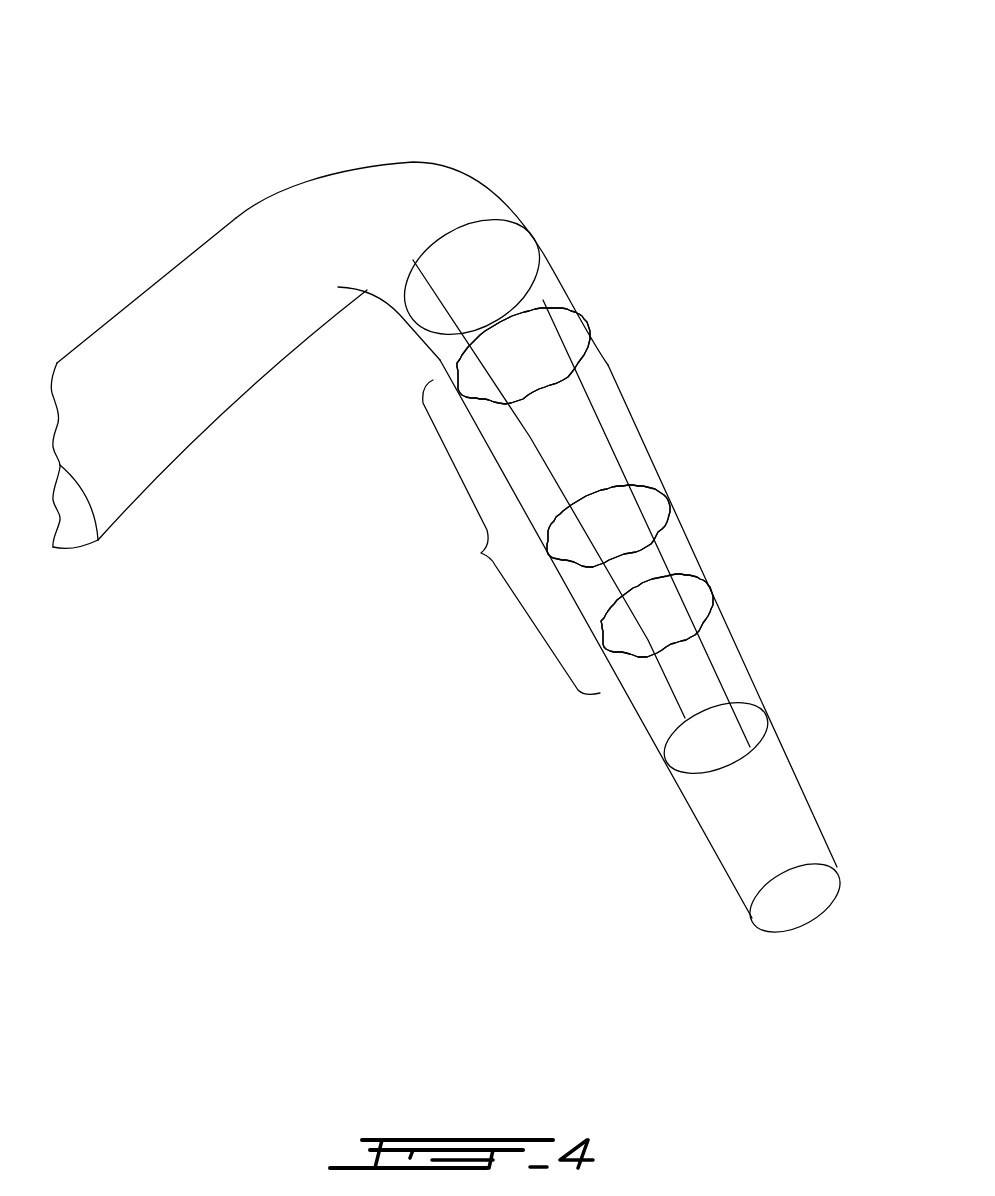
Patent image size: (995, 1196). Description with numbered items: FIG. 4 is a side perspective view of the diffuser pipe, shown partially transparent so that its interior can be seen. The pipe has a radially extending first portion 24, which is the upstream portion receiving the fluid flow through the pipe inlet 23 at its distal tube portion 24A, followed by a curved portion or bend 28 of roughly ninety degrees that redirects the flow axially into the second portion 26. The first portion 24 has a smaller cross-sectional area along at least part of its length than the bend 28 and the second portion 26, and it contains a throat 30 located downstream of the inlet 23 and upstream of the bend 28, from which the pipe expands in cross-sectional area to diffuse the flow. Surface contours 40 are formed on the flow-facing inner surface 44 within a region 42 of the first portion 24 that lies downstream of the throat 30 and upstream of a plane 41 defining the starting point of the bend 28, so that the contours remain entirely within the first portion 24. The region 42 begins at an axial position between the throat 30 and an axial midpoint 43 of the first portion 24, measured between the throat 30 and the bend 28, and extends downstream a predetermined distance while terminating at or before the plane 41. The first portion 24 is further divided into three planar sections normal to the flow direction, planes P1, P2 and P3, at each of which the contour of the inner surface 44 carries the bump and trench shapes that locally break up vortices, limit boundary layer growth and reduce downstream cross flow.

The pipe inlet 23 is at (810, 902).
The first portion 24 is at (751, 622).
The distal tube portion 24A is at (630, 690).
The second portion 26 is at (90, 318).
The curved portion 28 is at (376, 150).
The throat 30 is at (748, 748).
The surface contours 40 is at (644, 640).
The plane 41 is at (493, 220).
The region 42 is at (511, 537).
The axial midpoint 43 is at (670, 497).
The inner surface 44 is at (617, 385).
The plane P1 is at (697, 577).
The plane P2 is at (643, 480).
The plane P3 is at (570, 307).